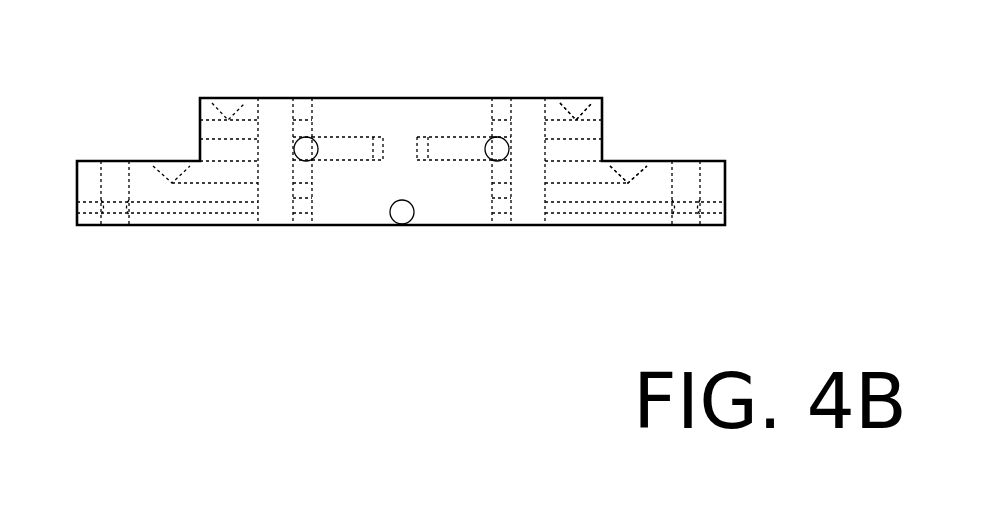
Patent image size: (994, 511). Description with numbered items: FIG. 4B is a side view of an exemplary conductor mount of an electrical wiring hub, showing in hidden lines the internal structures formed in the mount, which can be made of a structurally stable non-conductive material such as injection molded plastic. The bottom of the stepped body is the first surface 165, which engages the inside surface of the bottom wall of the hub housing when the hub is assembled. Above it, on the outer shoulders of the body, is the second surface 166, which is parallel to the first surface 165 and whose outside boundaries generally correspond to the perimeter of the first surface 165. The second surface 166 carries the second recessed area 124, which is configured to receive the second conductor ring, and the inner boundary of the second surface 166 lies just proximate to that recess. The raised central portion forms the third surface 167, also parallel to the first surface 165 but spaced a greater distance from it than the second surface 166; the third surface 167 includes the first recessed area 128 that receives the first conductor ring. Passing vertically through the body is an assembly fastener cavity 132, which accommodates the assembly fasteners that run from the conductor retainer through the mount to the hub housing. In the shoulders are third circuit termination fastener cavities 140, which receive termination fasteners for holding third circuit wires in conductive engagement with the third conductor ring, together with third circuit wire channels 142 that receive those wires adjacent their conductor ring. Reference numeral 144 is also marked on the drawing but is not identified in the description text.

The second surface 166 is at (128, 160).
The left mounting flange 144 is at (115, 208).
The first surface 165 is at (278, 225).
The third surface 167 is at (303, 97).
The assembly fastener cavity 132 is at (498, 97).
The first recessed area 128 is at (575, 102).
The second recessed area 124 is at (627, 168).
The third circuit termination fastener cavities 140 is at (683, 170).
The third circuit wire channels 142 is at (710, 207).